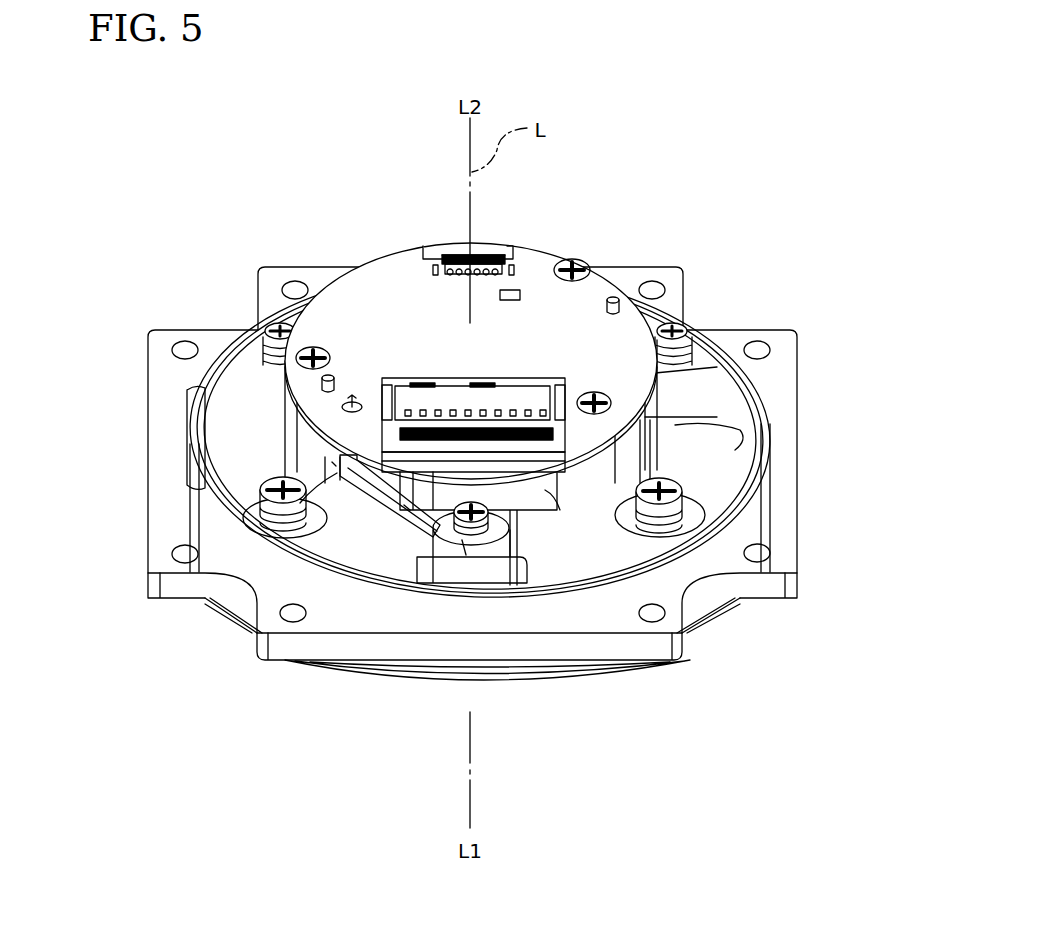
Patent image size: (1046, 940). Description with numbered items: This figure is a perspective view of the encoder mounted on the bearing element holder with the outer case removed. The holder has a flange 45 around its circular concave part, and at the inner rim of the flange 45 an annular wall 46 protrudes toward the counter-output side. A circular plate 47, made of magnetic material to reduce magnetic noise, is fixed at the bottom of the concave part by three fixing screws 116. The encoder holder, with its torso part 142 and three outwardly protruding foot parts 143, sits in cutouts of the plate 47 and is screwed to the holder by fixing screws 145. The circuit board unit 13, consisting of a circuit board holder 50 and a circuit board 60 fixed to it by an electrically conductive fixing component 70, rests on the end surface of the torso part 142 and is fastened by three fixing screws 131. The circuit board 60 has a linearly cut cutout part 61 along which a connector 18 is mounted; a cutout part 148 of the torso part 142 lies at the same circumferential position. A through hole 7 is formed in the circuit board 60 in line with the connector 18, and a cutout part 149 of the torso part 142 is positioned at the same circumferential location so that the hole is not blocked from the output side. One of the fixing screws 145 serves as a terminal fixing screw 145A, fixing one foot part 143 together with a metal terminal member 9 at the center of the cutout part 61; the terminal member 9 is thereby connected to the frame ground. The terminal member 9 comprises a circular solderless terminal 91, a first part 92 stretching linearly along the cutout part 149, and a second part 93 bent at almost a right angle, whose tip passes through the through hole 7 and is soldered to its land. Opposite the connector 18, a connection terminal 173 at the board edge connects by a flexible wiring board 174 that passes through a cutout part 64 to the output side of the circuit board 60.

The through hole 7 is at (360, 403).
The terminal member 9 is at (381, 614).
The circuit board unit 13 is at (347, 364).
The connector 18 is at (473, 383).
The flange 45 is at (783, 530).
The annular wall 46 is at (703, 547).
The plate 47 is at (730, 443).
The circuit board holder 50 is at (284, 410).
The circuit board 60 is at (284, 392).
The cutout part 61 is at (513, 450).
The cutout part 64 is at (432, 253).
The fixing component 70 is at (327, 376).
The solderless terminal 91 is at (462, 540).
The first part 92 is at (408, 508).
The second part 93 is at (332, 462).
The fixing screws 116 is at (687, 483).
The fixing screws 131 is at (320, 350).
The torso part 142 is at (278, 428).
The foot parts 143 is at (237, 380).
The fixing screws 145 is at (273, 327).
The terminal fixing screw 145A is at (520, 585).
The cutout part 148 is at (545, 490).
The cutout part 149 is at (293, 442).
The connection terminal 173 is at (507, 290).
The flexible wiring board 174 is at (483, 251).